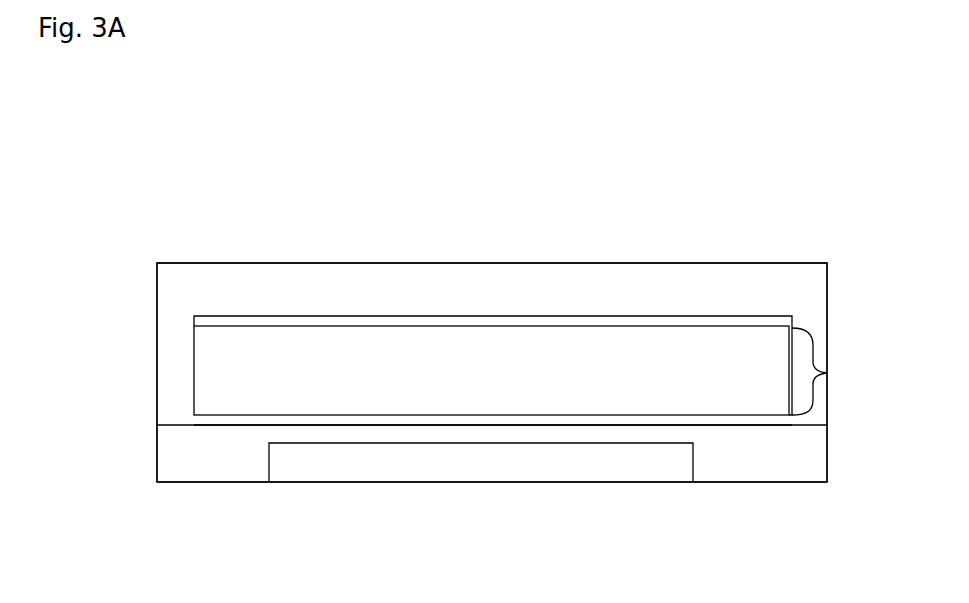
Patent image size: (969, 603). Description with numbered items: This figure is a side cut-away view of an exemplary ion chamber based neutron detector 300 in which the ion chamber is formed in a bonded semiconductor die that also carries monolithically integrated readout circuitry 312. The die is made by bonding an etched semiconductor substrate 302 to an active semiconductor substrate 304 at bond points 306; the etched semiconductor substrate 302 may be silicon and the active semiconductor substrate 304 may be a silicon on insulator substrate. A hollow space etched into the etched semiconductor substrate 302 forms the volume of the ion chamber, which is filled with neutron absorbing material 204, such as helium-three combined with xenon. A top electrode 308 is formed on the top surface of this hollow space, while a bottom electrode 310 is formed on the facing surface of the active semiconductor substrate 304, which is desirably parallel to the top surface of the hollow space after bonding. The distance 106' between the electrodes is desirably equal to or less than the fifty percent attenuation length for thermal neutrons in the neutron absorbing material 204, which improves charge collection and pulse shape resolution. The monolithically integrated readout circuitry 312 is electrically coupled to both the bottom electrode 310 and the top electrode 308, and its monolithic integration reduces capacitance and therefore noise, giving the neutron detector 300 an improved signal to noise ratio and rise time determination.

The ion chamber based neutron detector 300 is at (307, 80).
The etched semiconductor substrate 302 is at (247, 263).
The active semiconductor substrate 304 is at (178, 484).
The bond points 306 is at (168, 427).
The top electrode 308 is at (642, 316).
The bottom electrode 310 is at (475, 425).
The monolithically integrated readout circuitry 312 is at (358, 482).
The neutron absorbing material 204 is at (672, 393).
The distance between bottom electrode and top electrode 106' is at (832, 371).